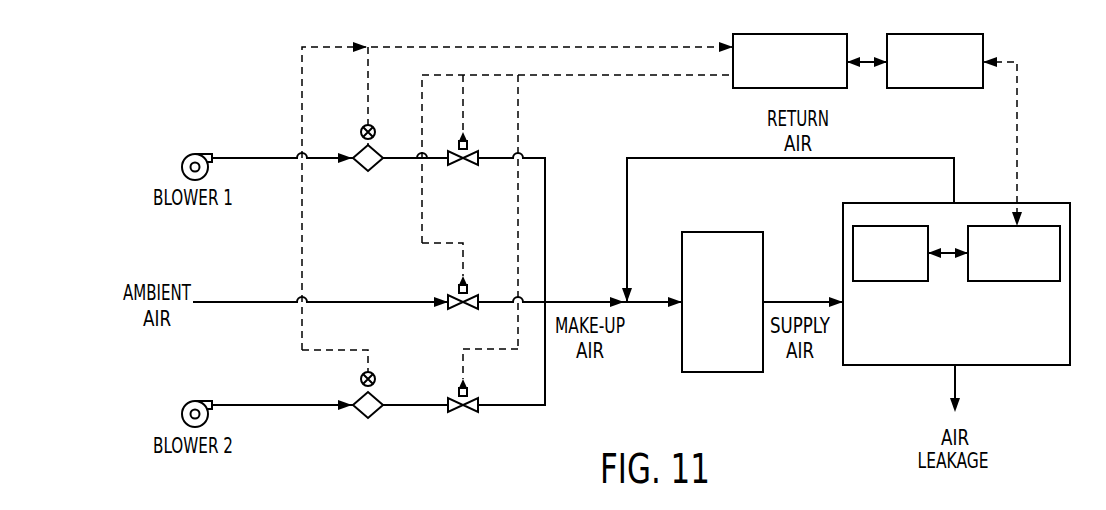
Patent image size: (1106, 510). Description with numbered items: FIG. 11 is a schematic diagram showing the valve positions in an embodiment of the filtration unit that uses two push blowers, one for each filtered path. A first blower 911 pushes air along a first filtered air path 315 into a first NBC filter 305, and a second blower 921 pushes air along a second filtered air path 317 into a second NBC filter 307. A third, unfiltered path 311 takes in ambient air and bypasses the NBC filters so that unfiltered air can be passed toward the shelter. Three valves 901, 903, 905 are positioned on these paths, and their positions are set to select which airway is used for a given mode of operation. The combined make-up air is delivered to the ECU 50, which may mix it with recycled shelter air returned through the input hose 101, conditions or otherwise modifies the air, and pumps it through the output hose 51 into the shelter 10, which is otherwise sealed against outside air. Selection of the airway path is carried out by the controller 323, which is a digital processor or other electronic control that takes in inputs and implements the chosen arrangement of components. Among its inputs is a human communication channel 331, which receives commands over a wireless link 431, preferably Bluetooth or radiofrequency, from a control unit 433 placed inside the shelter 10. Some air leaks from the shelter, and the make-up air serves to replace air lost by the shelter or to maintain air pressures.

The shelter 10 is at (1043, 203).
The ECU 50 is at (725, 232).
The output hose 51 is at (794, 302).
The input hose 101 is at (665, 158).
The NBC filter 305 is at (378, 150).
The NBC filter 307 is at (378, 398).
The unfiltered path 311 is at (369, 302).
The filtered air path 315 is at (400, 161).
The filtered air path 317 is at (413, 405).
The controller 323 is at (746, 89).
The human communication channel 331 is at (916, 89).
The wireless link 431 is at (1041, 282).
The control unit 433 is at (886, 282).
The valve 901 is at (470, 152).
The valve 903 is at (470, 298).
The valve 905 is at (470, 400).
The blower 911 is at (202, 150).
The blower 921 is at (202, 398).